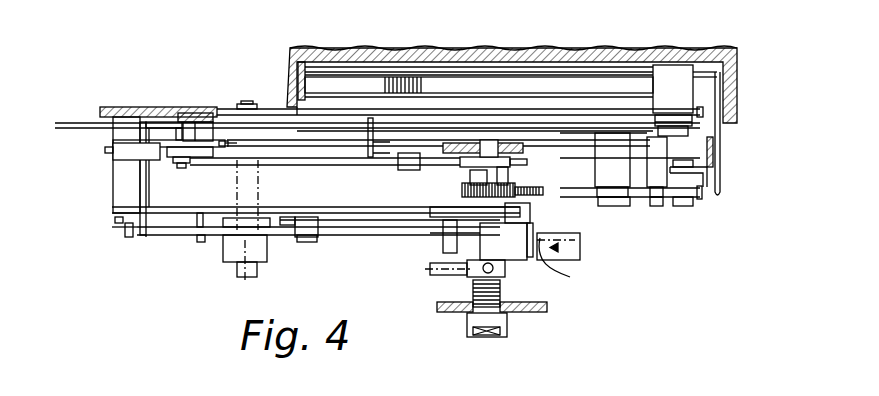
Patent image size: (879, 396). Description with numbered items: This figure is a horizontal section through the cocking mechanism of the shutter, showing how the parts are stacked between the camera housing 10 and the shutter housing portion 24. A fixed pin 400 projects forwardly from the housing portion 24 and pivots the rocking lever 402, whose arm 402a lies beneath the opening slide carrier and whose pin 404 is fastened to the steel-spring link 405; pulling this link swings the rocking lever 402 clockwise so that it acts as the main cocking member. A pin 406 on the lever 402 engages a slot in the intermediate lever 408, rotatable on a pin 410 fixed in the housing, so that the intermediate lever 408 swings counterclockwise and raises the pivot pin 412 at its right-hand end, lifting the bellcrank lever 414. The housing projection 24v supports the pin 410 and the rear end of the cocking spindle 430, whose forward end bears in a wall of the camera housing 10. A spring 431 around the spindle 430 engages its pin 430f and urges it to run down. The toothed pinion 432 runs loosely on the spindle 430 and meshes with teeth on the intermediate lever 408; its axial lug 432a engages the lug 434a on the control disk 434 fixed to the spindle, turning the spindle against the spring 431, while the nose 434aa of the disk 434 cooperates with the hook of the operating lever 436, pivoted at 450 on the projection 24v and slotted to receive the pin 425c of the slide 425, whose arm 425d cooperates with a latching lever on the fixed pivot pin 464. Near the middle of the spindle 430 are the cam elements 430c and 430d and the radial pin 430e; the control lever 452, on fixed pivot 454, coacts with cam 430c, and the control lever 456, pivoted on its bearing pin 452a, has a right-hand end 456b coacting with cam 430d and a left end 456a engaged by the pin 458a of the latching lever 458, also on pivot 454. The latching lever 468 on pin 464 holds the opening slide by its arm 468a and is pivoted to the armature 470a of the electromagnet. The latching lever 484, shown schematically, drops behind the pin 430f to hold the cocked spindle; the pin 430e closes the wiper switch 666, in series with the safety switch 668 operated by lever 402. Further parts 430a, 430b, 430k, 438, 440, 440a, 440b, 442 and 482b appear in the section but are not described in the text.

The camera housing 10 is at (443, 313).
The shutter housing portion 24 is at (296, 50).
The housing projection 24v is at (390, 147).
The fixed pin 400 is at (663, 72).
The rocking lever 402 is at (550, 113).
The arm of rocking lever 402a is at (268, 108).
The pin 404 is at (678, 137).
The link 405 is at (60, 121).
The pin 406 is at (656, 207).
The intermediate lever 408 is at (683, 207).
The pin 410 is at (613, 173).
The pivot pin 412 is at (676, 207).
The bellcrank lever 414 is at (707, 195).
The slide 425 is at (178, 132).
The pin 425c is at (173, 127).
The arm of slide 425d is at (140, 191).
The cocking spindle 430 is at (505, 268).
The block 430a is at (487, 143).
The base block 430b is at (470, 320).
The operating cam element 430c is at (530, 213).
The control cam element 430d is at (533, 223).
The radially extending pin 430e is at (580, 240).
The pin 430f is at (489, 263).
The cross member 430k is at (490, 336).
The spring 431 is at (470, 292).
The toothed pinion 432 is at (462, 190).
The axial projection 432a is at (470, 178).
The control disk 434 is at (463, 160).
The lug 434a is at (504, 178).
The nose 434aa is at (528, 162).
The operating lever 436 is at (286, 157).
The slide bar 438 is at (331, 83).
The guide layer 440 is at (447, 67).
The guide end 440a is at (305, 62).
The vertical rod 440b is at (718, 200).
The spring 442 is at (394, 77).
The pivot 450 is at (405, 170).
The control lever 452 is at (188, 209).
The bearing pin 452a is at (310, 243).
The fixed pivot 454 is at (117, 173).
The control lever 456 is at (333, 233).
The left end of control lever 456a is at (147, 237).
The right-hand end of control lever 456b is at (453, 243).
The latching lever 458 is at (115, 215).
The pin 458a is at (130, 238).
The fixed pivot pin 464 is at (203, 130).
The latching lever 468 is at (113, 142).
The arm of latching lever 468a is at (232, 141).
The armature 470a is at (117, 152).
The plate 482b is at (517, 209).
The latching lever 484 is at (450, 266).
The wiper contact switch 666 is at (572, 276).
The safety contact switch 668 is at (247, 103).